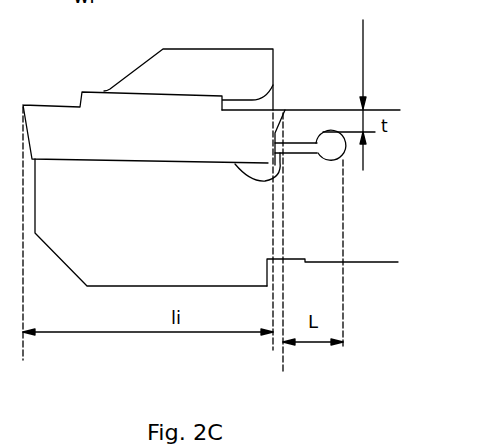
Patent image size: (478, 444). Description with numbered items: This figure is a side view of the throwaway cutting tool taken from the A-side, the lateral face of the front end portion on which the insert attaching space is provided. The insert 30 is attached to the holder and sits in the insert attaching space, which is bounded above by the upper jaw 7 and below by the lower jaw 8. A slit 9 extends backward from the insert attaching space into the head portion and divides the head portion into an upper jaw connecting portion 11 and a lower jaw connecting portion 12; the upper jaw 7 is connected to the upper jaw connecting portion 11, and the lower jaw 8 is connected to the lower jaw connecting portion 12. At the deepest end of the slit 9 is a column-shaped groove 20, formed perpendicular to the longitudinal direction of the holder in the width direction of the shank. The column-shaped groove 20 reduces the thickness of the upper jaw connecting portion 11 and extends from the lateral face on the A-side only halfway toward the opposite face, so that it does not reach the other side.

The A-side A is at (230, 26).
The insert 30 is at (75, 122).
The upper jaw 7 is at (182, 70).
The upper jaw connecting portion 11 is at (302, 128).
The slit 9 is at (308, 148).
The column-shaped groove 20 is at (332, 150).
The lower jaw 8 is at (77, 200).
The lower jaw connecting portion 12 is at (302, 202).